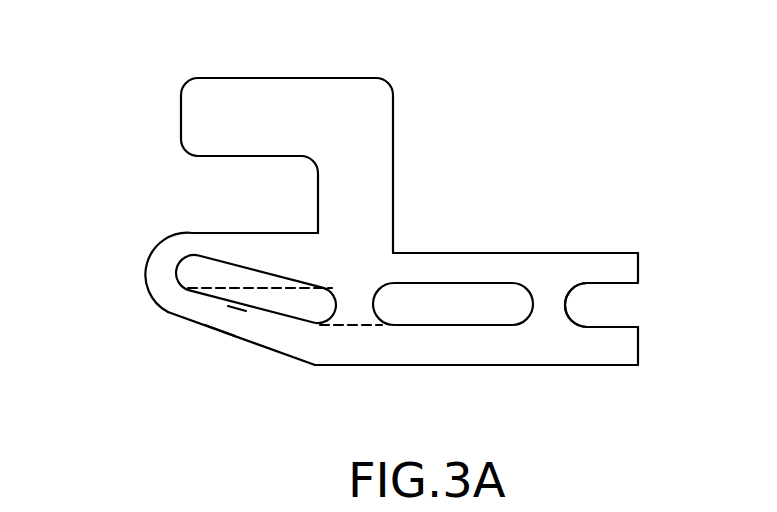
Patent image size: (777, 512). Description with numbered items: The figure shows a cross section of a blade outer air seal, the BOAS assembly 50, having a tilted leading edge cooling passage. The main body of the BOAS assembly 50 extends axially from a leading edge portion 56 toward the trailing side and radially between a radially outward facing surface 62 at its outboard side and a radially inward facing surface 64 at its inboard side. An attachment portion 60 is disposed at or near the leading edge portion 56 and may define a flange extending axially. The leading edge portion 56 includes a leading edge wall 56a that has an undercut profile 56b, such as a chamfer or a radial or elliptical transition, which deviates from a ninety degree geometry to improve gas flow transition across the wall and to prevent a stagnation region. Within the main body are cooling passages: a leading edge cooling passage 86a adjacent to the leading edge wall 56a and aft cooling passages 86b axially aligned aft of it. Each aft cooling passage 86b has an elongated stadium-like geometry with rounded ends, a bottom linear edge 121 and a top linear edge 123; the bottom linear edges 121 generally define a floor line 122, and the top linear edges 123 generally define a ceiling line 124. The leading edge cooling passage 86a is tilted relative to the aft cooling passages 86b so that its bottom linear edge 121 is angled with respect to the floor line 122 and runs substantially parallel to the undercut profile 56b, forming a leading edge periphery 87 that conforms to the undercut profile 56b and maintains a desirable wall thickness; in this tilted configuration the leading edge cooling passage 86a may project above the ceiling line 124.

The BOAS assembly 50 is at (637, 263).
The leading edge portion 56 is at (140, 266).
The leading edge wall 56a is at (150, 288).
The undercut profile 56b is at (158, 310).
The attachment portion 60 is at (286, 101).
The radially outward facing surface 62 is at (537, 253).
The radially inward facing surface 64 is at (490, 367).
The leading edge cooling passage 86a is at (263, 293).
The aft cooling passages 86b is at (503, 313).
The leading edge periphery 87 is at (213, 300).
The bottom linear edge 121 is at (237, 307).
The floor line 122 is at (347, 326).
The top linear edge 123 is at (460, 283).
The ceiling line 124 is at (270, 290).